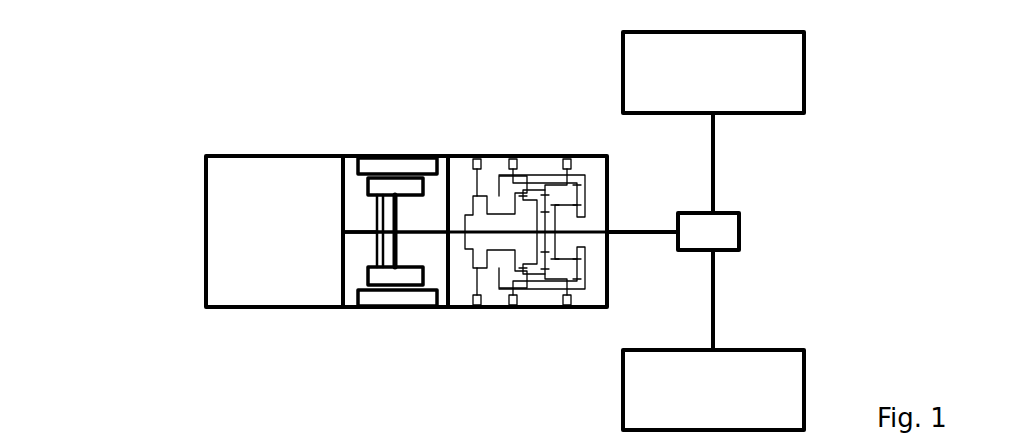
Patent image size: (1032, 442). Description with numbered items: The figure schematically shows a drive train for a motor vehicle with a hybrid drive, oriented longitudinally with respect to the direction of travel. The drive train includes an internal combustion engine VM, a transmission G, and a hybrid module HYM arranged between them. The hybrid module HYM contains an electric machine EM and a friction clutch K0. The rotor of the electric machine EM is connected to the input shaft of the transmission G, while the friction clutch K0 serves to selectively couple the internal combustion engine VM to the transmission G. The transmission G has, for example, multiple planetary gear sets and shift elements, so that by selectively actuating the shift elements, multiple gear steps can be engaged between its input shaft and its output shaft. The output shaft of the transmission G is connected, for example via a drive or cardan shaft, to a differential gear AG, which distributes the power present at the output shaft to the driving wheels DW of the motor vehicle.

The internal combustion engine VM is at (242, 156).
The friction clutch K0 is at (354, 227).
The hybrid module HYM is at (352, 156).
The electric machine EM is at (407, 143).
The transmission G is at (505, 156).
The differential gear AG is at (739, 224).
The driving wheels DW is at (804, 68).